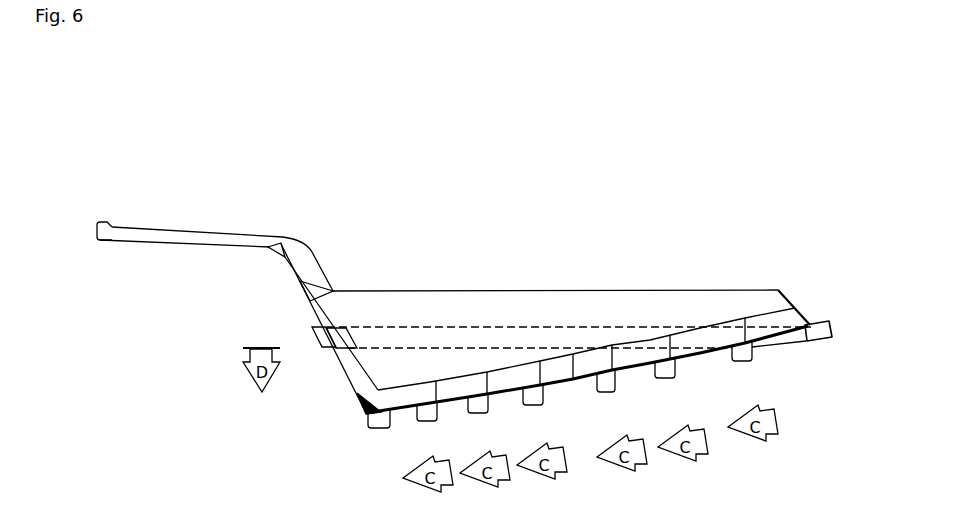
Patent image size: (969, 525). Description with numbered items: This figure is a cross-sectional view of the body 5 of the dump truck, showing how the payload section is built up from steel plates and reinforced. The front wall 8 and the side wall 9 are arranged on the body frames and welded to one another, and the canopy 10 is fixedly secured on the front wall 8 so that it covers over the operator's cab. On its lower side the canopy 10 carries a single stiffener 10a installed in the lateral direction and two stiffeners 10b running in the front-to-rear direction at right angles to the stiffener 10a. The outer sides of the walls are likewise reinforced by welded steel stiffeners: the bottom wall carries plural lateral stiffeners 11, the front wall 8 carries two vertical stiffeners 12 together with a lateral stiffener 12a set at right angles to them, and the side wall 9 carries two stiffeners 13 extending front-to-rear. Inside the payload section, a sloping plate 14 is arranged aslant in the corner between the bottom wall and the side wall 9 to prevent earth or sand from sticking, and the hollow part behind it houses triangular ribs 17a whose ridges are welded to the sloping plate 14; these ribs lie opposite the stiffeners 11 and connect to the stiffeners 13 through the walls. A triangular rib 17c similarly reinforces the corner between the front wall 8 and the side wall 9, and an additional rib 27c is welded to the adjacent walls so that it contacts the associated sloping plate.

The body 5 is at (669, 284).
The front wall 8 is at (340, 367).
The side wall 9 is at (452, 302).
The canopy 10 is at (198, 229).
The stiffener 10a is at (277, 246).
The stiffener 10b is at (163, 246).
The stiffener 11 is at (430, 420).
The stiffener 12 is at (294, 278).
The stiffener 12a is at (315, 343).
The stiffener 13 is at (527, 327).
The sloping plate 14 is at (453, 388).
The rib 17a is at (543, 385).
The rib 17c is at (350, 347).
The additional rib 27c is at (335, 328).